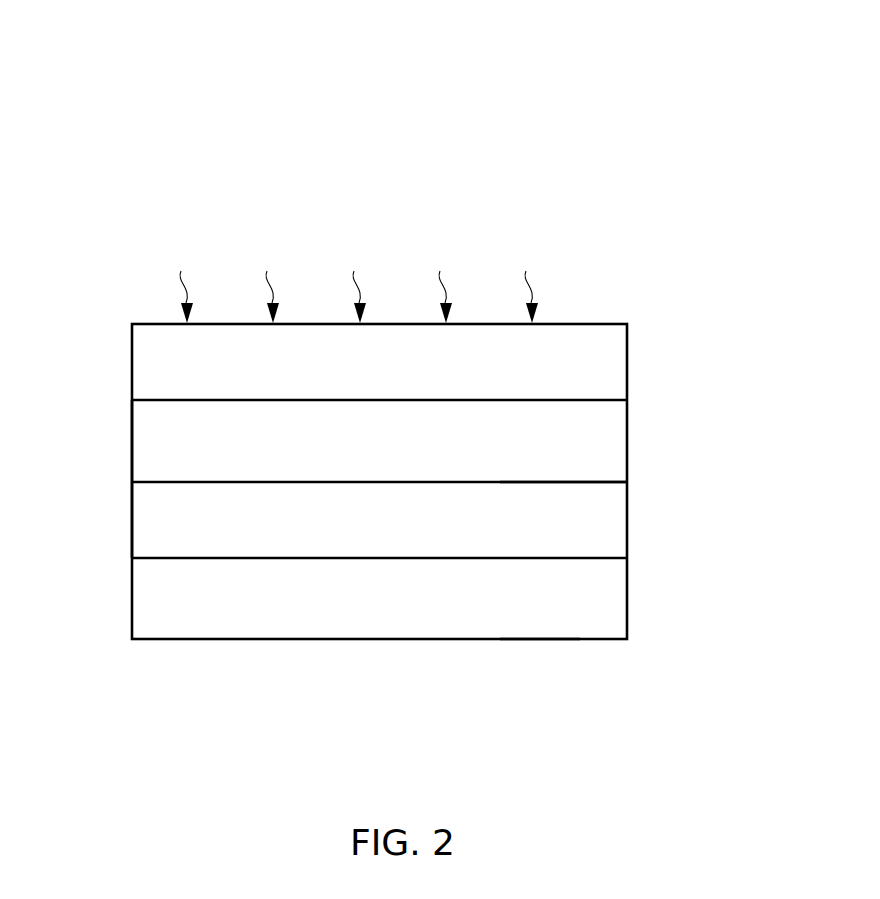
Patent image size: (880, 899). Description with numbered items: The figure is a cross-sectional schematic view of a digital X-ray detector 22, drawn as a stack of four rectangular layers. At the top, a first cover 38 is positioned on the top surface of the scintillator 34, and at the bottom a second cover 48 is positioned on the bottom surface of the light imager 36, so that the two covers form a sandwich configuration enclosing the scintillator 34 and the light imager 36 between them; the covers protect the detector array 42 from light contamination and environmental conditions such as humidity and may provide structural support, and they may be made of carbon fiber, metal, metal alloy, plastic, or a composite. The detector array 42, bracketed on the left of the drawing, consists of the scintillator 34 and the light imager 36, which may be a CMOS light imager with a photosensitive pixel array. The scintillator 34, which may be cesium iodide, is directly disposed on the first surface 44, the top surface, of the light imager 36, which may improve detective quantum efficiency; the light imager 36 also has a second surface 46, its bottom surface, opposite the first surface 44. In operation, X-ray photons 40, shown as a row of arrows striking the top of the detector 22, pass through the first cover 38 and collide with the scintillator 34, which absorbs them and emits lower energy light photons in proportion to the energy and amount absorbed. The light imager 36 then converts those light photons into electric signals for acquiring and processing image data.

The digital X-ray detector 22 is at (128, 123).
The scintillator 34 is at (630, 436).
The light imager 36 is at (630, 532).
The first cover 38 is at (630, 353).
The X-ray photons 40 is at (528, 277).
The detector array 42 is at (132, 400).
The first surface 44 is at (567, 482).
The second surface 46 is at (540, 560).
The second cover 48 is at (630, 592).